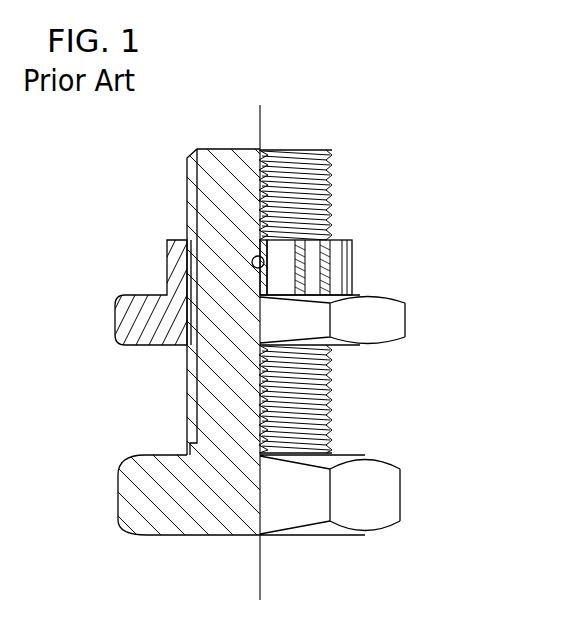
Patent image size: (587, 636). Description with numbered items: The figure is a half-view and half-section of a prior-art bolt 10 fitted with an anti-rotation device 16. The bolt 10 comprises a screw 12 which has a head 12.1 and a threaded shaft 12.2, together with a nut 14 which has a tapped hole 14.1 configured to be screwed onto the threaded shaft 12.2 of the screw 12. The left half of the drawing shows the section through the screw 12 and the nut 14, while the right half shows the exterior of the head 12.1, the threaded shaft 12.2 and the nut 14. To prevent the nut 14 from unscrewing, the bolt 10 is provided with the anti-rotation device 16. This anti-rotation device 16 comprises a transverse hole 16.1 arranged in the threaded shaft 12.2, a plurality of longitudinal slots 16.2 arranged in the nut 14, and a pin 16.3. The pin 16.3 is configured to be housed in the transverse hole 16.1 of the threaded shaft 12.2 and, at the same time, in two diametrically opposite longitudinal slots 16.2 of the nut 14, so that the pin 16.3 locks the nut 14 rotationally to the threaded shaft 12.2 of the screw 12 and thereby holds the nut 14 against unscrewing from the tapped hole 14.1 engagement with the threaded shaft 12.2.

The bolt 10 is at (412, 158).
The screw 12 is at (288, 512).
The head 12.1 is at (352, 500).
The threaded shaft 12.2 is at (293, 157).
The nut 14 is at (407, 318).
The tapped hole 14.1 is at (248, 247).
The anti-rotation device 16 is at (252, 264).
The transverse hole 16.1 is at (183, 338).
The longitudinal slots 16.2 is at (275, 286).
The pin 16.3 is at (332, 207).